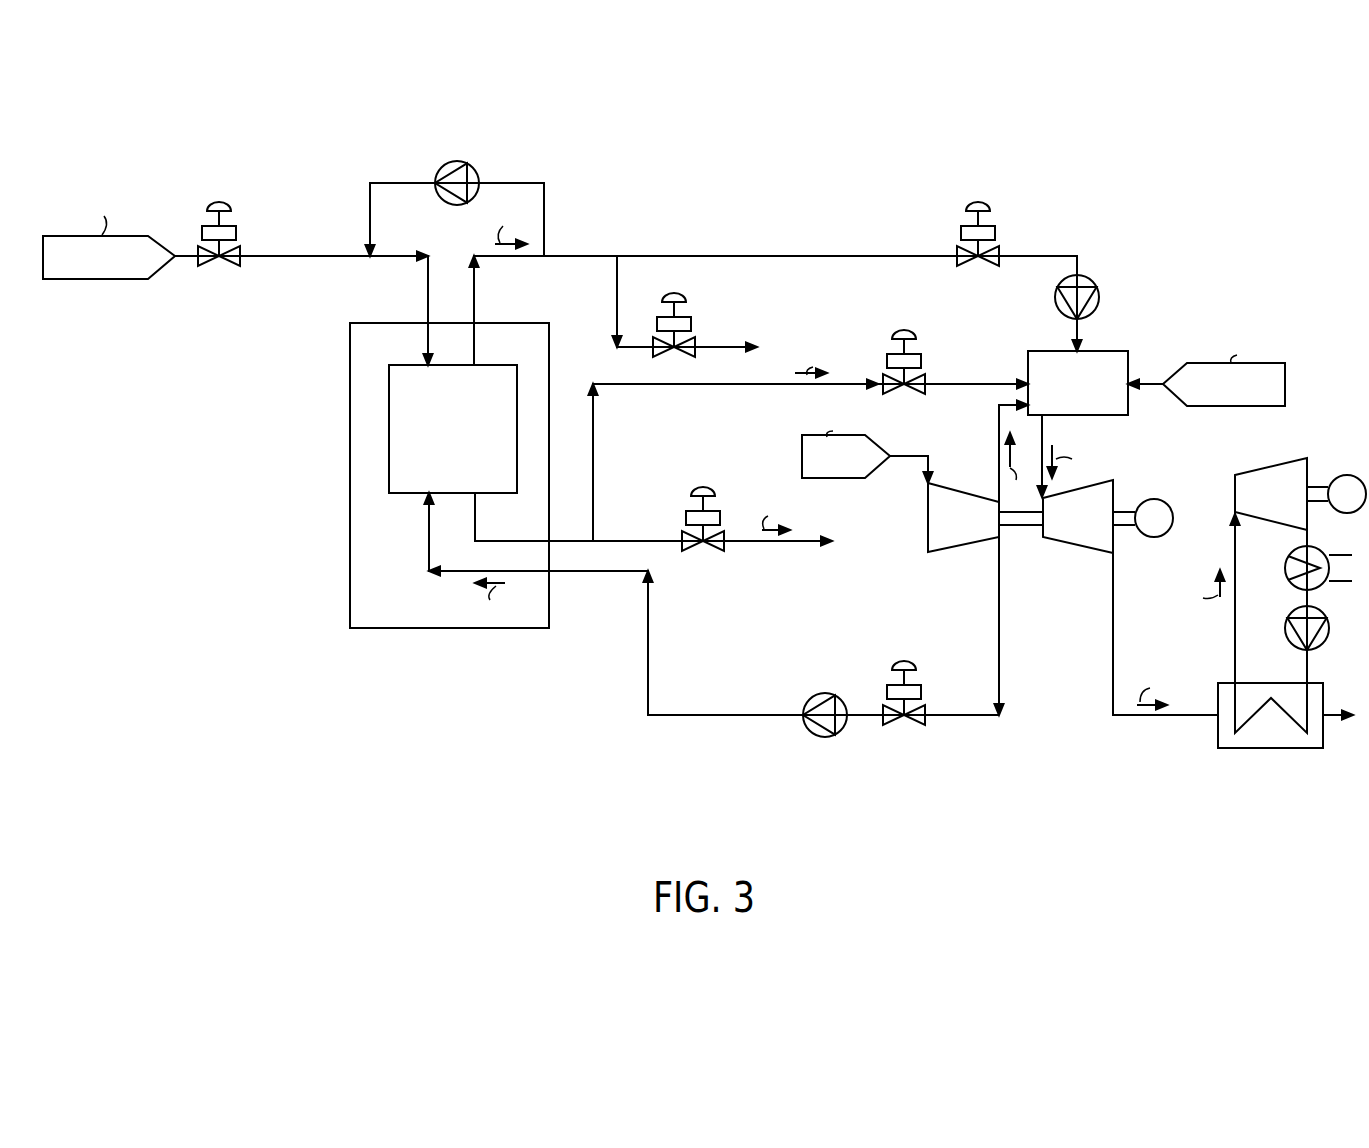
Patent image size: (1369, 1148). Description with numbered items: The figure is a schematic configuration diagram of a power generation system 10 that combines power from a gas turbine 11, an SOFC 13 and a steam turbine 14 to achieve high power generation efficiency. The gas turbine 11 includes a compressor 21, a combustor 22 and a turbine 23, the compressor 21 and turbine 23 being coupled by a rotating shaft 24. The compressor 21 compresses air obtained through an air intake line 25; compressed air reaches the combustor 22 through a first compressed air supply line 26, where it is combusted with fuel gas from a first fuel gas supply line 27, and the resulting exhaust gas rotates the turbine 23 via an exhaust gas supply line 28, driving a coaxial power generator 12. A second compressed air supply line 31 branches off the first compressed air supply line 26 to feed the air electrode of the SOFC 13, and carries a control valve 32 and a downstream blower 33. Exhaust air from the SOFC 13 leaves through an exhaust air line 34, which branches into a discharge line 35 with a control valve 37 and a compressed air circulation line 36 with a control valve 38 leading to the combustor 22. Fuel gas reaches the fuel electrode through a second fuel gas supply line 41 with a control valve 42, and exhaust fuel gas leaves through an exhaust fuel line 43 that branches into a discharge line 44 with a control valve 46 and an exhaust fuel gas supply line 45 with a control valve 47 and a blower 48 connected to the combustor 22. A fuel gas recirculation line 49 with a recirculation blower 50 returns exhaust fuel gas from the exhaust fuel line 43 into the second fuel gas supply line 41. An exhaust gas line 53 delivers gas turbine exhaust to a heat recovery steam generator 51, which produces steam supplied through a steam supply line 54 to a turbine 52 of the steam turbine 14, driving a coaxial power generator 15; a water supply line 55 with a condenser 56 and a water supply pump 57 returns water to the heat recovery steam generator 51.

The power generation system 10 is at (714, 120).
The gas turbine 11 is at (1133, 480).
The power generator 12 is at (1154, 537).
The SOFC 13 is at (485, 365).
The steam turbine 14 is at (1322, 442).
The power generator 15 is at (1347, 475).
The compressor 21 is at (943, 554).
The combustor 22 is at (1100, 351).
The turbine 23 is at (1065, 549).
The rotating shaft 24 is at (1019, 527).
The air intake line 25 is at (897, 454).
The first compressed air supply line 26 is at (996, 436).
The first fuel gas supply line 27 is at (1152, 383).
The exhaust gas supply line 28 is at (1045, 435).
The second compressed air supply line 31 is at (756, 716).
The control valve 32 is at (906, 662).
The blower 33 is at (829, 693).
The exhaust air line 34 is at (474, 526).
The discharge line 35 is at (626, 541).
The compressed air circulation line 36 is at (796, 385).
The control valve 37 is at (688, 490).
The control valve 38 is at (910, 329).
The second fuel gas supply line 41 is at (318, 254).
The control valve 42 is at (219, 201).
The exhaust fuel line 43 is at (525, 259).
The discharge line 44 is at (735, 347).
The exhaust fuel gas supply line 45 is at (800, 255).
The control valve 46 is at (680, 293).
The control valve 47 is at (983, 199).
The blower 48 is at (1094, 280).
The fuel gas recirculation line 49 is at (539, 182).
The recirculation blower 50 is at (457, 161).
The heat recovery steam generator 51 is at (1268, 748).
The turbine 52 is at (1234, 495).
The exhaust gas line 53 is at (1124, 716).
The steam supply line 54 is at (1235, 654).
The water supply line 55 is at (1307, 670).
The condenser 56 is at (1327, 558).
The water supply pump 57 is at (1329, 614).